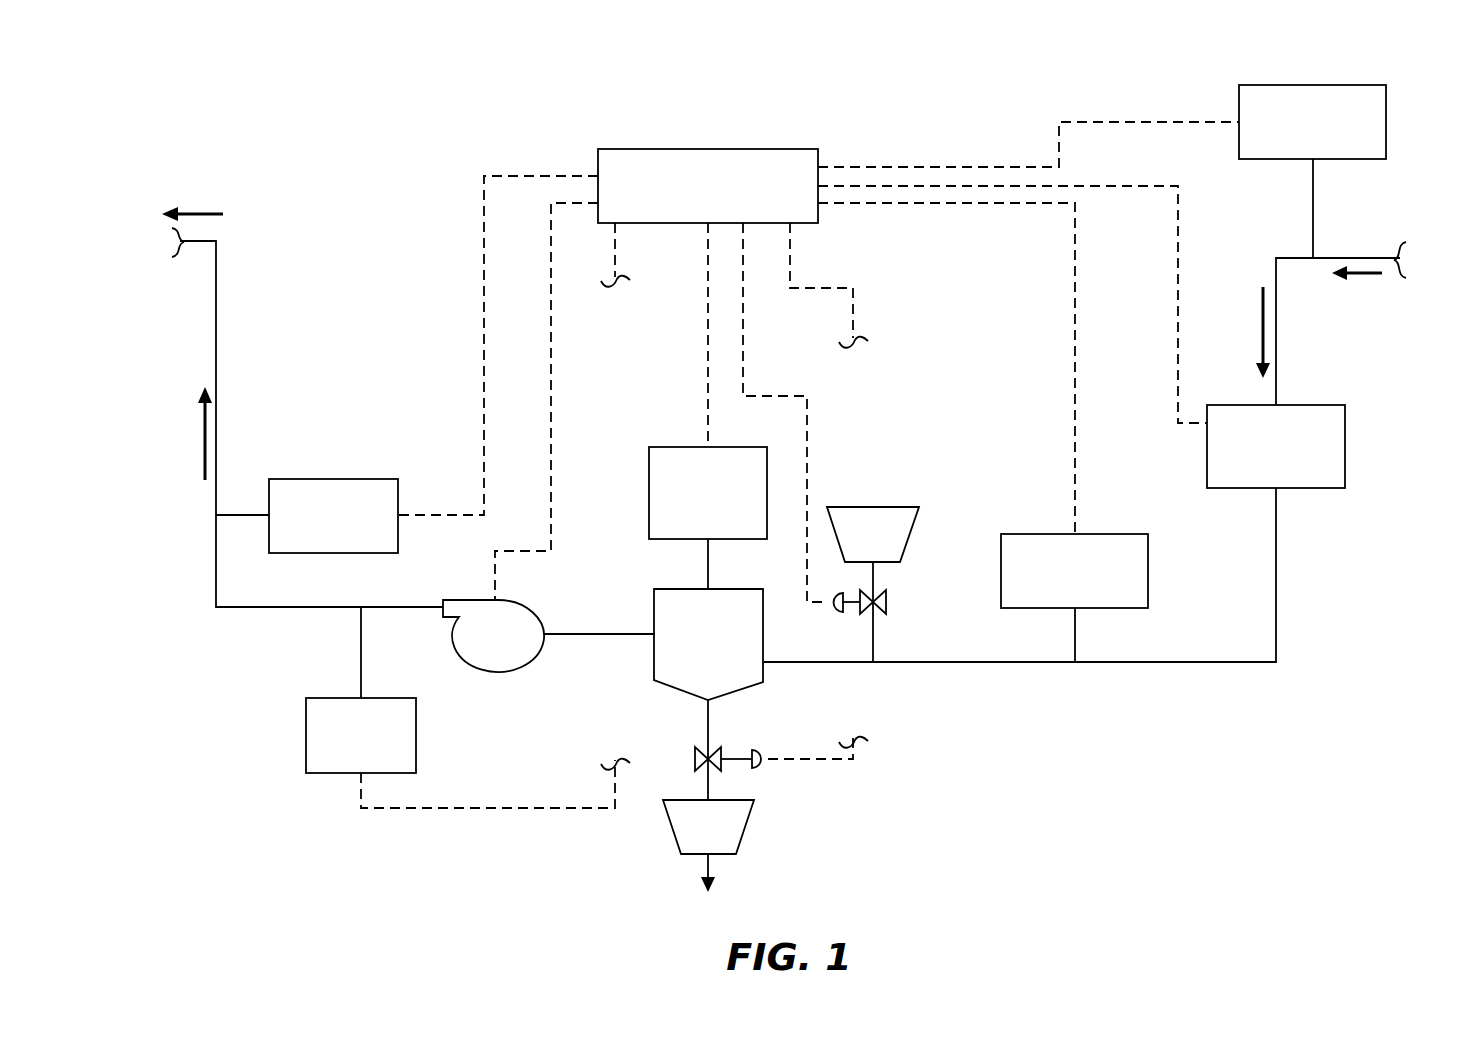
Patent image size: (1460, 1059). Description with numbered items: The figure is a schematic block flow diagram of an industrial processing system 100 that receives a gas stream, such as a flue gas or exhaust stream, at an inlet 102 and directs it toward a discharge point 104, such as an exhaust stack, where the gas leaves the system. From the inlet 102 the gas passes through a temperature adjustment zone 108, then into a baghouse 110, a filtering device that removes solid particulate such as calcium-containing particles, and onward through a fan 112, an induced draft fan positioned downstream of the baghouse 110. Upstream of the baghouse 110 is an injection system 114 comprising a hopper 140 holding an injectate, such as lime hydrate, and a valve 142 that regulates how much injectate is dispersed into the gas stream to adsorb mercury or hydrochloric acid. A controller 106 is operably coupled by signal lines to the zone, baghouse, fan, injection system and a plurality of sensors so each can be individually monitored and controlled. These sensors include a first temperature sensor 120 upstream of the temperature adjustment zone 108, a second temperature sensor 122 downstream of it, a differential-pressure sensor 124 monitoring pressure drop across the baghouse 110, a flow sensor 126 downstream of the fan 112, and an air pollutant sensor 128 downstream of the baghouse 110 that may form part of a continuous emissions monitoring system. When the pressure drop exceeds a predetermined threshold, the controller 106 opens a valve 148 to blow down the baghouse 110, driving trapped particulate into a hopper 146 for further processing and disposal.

The industrial processing system 100 is at (316, 130).
The inlet 102 is at (1422, 259).
The discharge point 104 is at (136, 264).
The controller 106 is at (778, 149).
The temperature adjustment zone 108 is at (1345, 440).
The baghouse 110 is at (654, 594).
The fan 112 is at (527, 664).
The injection system 114 is at (920, 478).
The first temperature sensor 120 is at (1386, 108).
The second temperature sensor 122 is at (1148, 560).
The differential-pressure sensor 124 is at (675, 447).
The flow sensor 126 is at (416, 750).
The air pollutant sensor 128 is at (352, 479).
The hopper 140 is at (913, 527).
The valve 142 is at (885, 590).
The hopper 146 is at (745, 830).
The valve 148 is at (703, 747).